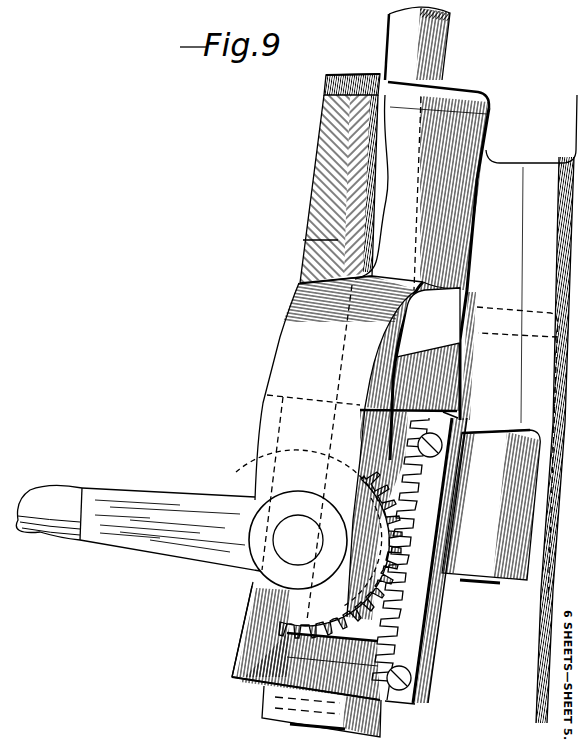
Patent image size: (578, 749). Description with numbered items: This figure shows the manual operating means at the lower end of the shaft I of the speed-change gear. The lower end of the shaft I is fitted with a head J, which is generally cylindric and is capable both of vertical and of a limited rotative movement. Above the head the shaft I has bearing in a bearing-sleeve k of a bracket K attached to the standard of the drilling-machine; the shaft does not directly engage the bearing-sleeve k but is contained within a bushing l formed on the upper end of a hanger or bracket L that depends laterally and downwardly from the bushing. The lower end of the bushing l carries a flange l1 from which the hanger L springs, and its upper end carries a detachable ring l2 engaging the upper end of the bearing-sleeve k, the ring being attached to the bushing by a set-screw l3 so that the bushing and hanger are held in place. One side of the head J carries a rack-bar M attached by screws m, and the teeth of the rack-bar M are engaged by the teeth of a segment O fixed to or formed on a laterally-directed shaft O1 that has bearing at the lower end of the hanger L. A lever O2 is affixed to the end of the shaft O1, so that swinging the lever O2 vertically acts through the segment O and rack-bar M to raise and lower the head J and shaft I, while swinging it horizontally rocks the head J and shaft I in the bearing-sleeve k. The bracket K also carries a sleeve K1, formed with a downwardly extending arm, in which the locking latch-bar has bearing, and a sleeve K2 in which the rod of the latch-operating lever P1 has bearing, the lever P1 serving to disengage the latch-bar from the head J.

The shaft I is at (420, 47).
The bracket K is at (493, 223).
The bearing-sleeve k is at (283, 160).
The sleeve K1 is at (428, 322).
The sleeve K2 is at (492, 573).
The hanger or bracket L is at (296, 353).
The bushing l is at (372, 80).
The flange l1 is at (304, 264).
The detachable ring l2 is at (345, 78).
The set-screw l3 is at (330, 88).
The rack-bar M is at (415, 513).
The screws m is at (442, 452).
The segment O is at (353, 483).
The shaft O1 is at (298, 540).
The lever O2 is at (172, 545).
The lever P1 is at (41, 538).
The head J is at (232, 642).